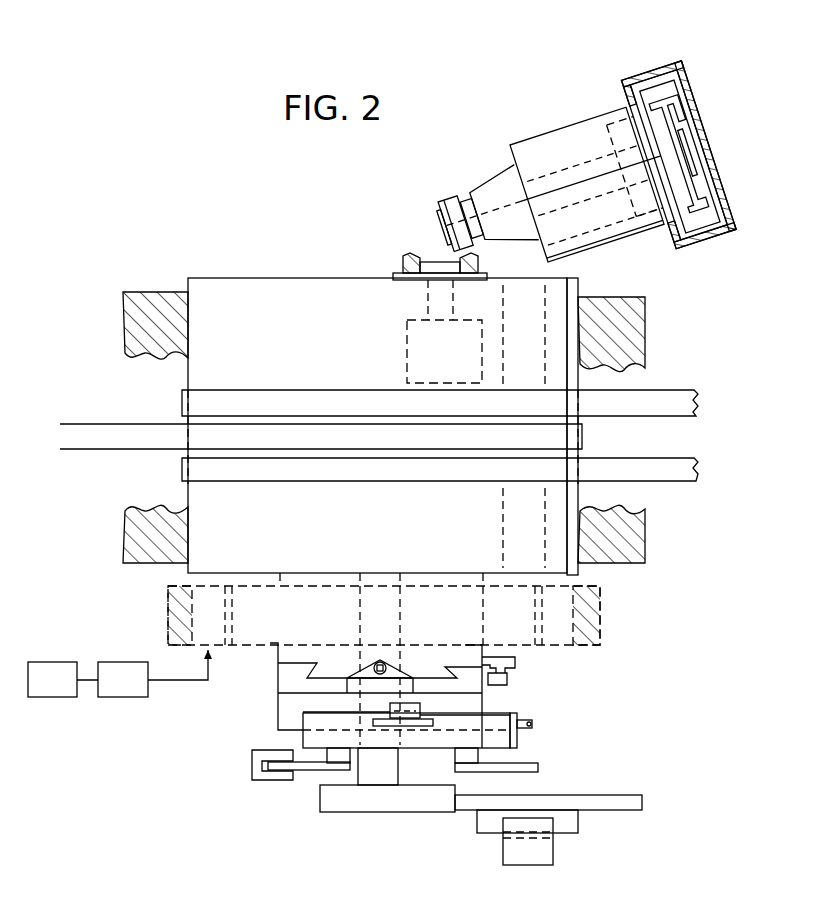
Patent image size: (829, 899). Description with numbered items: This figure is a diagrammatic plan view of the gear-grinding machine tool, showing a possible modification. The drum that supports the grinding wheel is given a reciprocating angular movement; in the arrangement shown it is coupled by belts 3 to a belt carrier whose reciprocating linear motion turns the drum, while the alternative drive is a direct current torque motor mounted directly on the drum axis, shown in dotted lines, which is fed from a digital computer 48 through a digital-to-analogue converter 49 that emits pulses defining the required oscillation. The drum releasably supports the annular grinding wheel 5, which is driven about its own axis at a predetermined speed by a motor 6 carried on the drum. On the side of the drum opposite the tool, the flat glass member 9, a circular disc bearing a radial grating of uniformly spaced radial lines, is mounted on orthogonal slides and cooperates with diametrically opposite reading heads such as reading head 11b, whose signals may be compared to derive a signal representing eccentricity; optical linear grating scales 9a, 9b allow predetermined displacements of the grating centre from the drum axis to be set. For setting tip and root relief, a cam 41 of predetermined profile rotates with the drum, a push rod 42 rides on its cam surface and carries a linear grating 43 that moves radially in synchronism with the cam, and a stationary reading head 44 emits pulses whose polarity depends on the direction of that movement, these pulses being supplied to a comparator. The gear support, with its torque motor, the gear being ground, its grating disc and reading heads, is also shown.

The belts 3 is at (182, 393).
The annular grinding wheel 5 is at (400, 266).
The motor 6 is at (451, 366).
The flat glass member 9 is at (300, 771).
The optical linear grating scale 9a is at (515, 662).
The optical linear grating scale 9b is at (420, 710).
The reading head 11b is at (252, 775).
The cam 41 is at (320, 805).
The push rod 42 is at (620, 795).
The linear grating 43 is at (477, 822).
The stationary reading head 44 is at (555, 856).
The digital computer 48 is at (52, 697).
The control box 49 is at (122, 697).